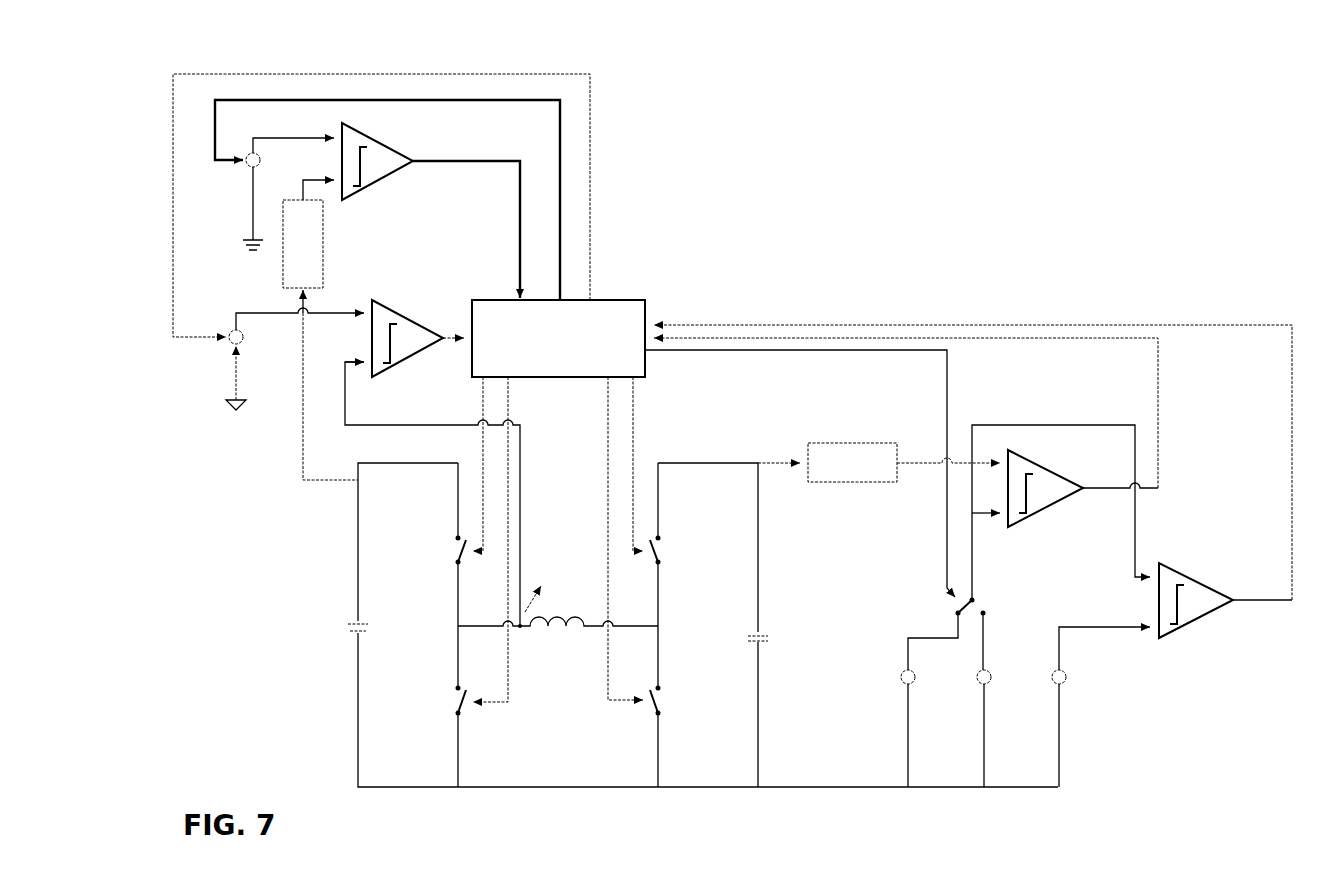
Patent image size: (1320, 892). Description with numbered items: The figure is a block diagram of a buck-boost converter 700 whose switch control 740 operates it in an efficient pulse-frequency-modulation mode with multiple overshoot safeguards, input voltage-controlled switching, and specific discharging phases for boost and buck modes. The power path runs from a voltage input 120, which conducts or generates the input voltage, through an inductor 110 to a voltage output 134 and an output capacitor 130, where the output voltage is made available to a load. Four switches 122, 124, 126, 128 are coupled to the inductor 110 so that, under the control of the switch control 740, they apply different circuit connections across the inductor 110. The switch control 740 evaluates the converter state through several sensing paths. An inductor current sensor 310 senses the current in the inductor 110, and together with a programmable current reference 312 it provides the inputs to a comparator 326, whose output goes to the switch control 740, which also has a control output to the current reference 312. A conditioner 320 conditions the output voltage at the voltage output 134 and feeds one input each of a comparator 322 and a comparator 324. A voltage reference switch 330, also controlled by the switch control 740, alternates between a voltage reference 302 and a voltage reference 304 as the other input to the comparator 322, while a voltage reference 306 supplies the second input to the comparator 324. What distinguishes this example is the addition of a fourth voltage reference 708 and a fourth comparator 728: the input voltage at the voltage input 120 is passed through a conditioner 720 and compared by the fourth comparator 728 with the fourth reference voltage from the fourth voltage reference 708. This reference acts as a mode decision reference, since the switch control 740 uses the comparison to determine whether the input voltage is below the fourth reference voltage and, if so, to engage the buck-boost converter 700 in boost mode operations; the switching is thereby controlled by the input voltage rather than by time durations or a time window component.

The buck-boost converter 700 is at (1177, 91).
The fourth voltage reference 708 is at (248, 167).
The fourth comparator 728 is at (397, 142).
The conditioner 720 is at (323, 236).
The current reference 312 is at (229, 348).
The comparator 326 is at (410, 318).
The switch control 740 is at (650, 310).
The voltage input 120 is at (352, 622).
The switch 122 is at (450, 551).
The switch 124 is at (450, 710).
The inductor 110 is at (560, 615).
The inductor current sensor 310 is at (524, 630).
The switch 126 is at (668, 553).
The switch 128 is at (668, 712).
The output capacitor 130 is at (766, 633).
The voltage output 134 is at (768, 462).
The conditioner 320 is at (860, 442).
The comparator 322 is at (1040, 514).
The voltage reference switch 330 is at (953, 606).
The voltage reference 302 is at (912, 688).
The voltage reference 304 is at (988, 688).
The voltage reference 306 is at (1064, 688).
The comparator 324 is at (1184, 626).